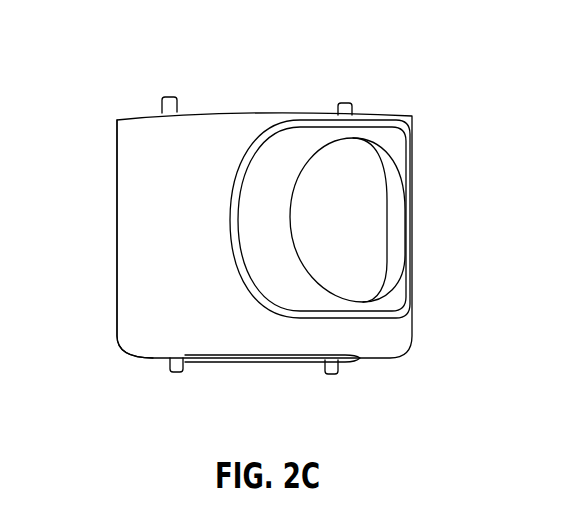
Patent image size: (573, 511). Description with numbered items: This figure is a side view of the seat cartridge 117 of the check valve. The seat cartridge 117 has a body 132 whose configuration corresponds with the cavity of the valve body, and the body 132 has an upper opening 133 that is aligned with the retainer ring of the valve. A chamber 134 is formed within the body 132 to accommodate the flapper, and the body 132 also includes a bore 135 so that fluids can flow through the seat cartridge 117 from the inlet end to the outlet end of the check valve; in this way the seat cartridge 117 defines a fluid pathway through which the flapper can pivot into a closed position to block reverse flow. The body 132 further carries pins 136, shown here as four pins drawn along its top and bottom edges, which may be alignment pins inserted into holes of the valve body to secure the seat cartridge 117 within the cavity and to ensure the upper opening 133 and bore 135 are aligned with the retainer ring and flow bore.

The seat cartridge 117 is at (242, 87).
The body 132 is at (117, 118).
The upper opening 133 is at (395, 188).
The chamber 134 is at (358, 263).
The bore 135 is at (255, 358).
The pins 136 is at (346, 100).